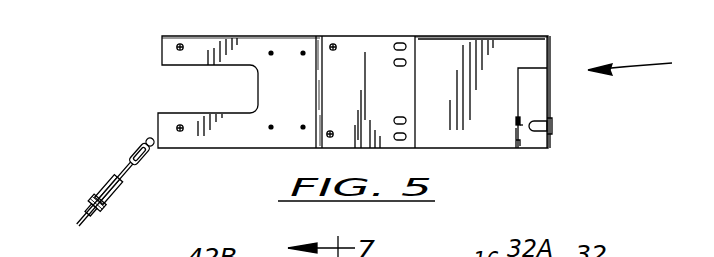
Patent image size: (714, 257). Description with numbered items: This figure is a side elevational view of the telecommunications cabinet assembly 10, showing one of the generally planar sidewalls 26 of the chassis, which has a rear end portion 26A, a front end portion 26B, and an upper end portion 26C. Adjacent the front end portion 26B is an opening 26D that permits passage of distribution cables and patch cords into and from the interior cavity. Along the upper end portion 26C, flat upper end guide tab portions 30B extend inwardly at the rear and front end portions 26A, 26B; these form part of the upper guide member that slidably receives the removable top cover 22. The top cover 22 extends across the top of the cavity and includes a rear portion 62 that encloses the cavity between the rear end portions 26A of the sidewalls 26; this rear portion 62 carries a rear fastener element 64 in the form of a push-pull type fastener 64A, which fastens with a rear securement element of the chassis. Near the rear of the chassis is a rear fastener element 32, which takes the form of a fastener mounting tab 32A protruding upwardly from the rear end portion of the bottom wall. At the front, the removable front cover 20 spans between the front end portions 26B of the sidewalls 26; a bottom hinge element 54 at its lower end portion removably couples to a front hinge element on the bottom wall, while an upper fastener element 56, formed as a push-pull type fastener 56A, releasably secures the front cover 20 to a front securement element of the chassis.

The telecommunications cabinet assembly 10 is at (648, 64).
The front cover 20 is at (136, 170).
The top cover 22 is at (437, 37).
The sidewall 26 is at (382, 135).
The rear end portion of sidewall 26A is at (552, 52).
The front end portion of sidewall 26B is at (161, 52).
The upper end portion of sidewall 26C is at (335, 36).
The opening 26D is at (187, 85).
The upper end guide tab portion 30B is at (212, 34).
The rear fastener element 32 is at (520, 126).
The fastener mounting tab 32A is at (517, 129).
The bottom hinge element 54 is at (147, 139).
The upper fastener element 56 is at (82, 226).
The push-pull fastener 56A is at (100, 212).
The rear portion of top cover 62 is at (550, 88).
The rear fastener element of top cover 64 is at (553, 120).
The push-pull fastener 64A is at (553, 130).